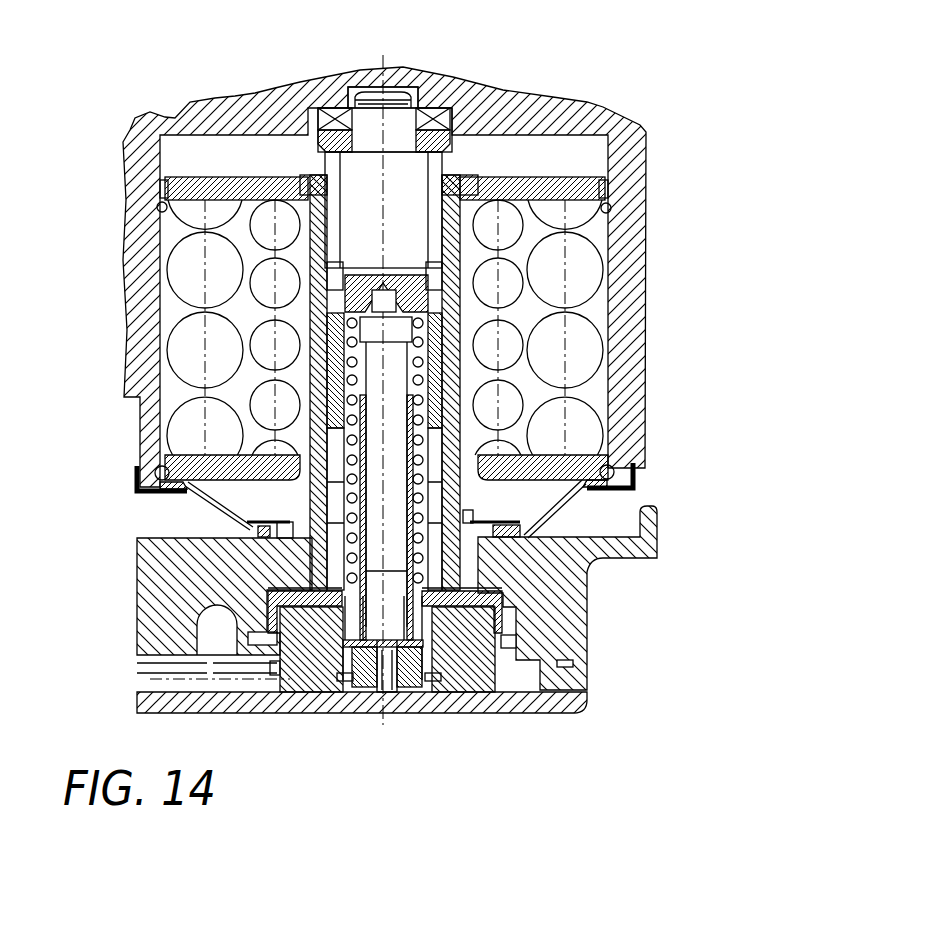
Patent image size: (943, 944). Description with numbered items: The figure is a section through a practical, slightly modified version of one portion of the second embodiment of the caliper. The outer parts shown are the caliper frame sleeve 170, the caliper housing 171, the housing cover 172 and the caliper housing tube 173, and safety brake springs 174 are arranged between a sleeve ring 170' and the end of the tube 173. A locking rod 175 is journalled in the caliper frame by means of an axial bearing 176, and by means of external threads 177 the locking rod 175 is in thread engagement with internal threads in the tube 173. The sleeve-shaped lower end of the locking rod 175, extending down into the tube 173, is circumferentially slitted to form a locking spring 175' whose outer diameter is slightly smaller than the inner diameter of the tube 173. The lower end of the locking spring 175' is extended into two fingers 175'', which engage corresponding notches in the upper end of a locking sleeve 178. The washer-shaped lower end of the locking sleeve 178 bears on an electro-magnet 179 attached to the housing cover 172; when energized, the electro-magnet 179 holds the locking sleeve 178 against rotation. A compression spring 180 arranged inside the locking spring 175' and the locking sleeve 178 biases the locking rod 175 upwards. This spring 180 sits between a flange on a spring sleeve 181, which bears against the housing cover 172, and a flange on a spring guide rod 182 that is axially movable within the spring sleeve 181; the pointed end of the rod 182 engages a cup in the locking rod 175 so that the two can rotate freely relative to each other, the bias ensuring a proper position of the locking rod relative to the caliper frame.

The caliper frame sleeve 170 is at (431, 277).
The sleeve ring 170' is at (440, 492).
The caliper housing 171 is at (565, 632).
The housing cover 172 is at (523, 700).
The caliper housing tube 173 is at (453, 250).
The safety brake springs 174 is at (587, 267).
The locking rod 175 is at (343, 157).
The locking spring 175' is at (535, 443).
The fingers 175'' is at (531, 382).
The axial bearing 176 is at (440, 108).
The external threads 177 is at (447, 198).
The locking sleeve 178 is at (437, 622).
The electro-magnet 179 is at (480, 688).
The compression spring 180 is at (423, 522).
The spring sleeve 181 is at (460, 550).
The spring guide rod 182 is at (400, 383).